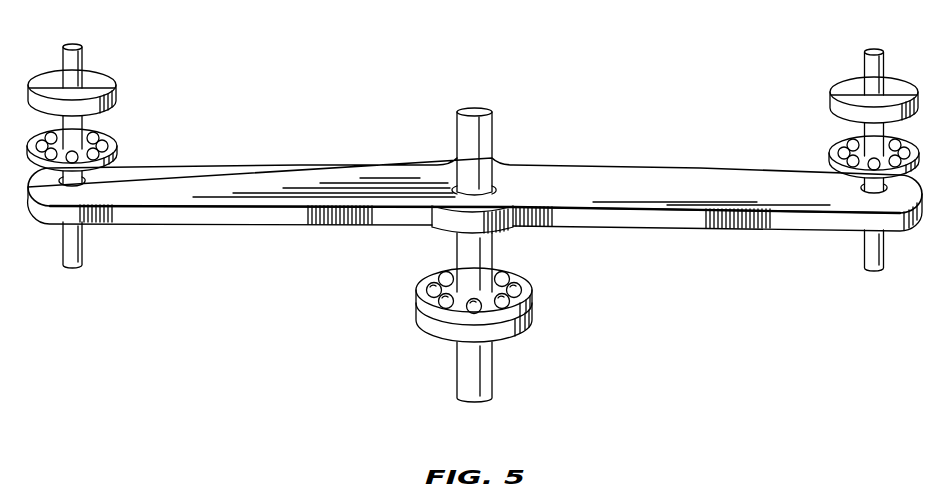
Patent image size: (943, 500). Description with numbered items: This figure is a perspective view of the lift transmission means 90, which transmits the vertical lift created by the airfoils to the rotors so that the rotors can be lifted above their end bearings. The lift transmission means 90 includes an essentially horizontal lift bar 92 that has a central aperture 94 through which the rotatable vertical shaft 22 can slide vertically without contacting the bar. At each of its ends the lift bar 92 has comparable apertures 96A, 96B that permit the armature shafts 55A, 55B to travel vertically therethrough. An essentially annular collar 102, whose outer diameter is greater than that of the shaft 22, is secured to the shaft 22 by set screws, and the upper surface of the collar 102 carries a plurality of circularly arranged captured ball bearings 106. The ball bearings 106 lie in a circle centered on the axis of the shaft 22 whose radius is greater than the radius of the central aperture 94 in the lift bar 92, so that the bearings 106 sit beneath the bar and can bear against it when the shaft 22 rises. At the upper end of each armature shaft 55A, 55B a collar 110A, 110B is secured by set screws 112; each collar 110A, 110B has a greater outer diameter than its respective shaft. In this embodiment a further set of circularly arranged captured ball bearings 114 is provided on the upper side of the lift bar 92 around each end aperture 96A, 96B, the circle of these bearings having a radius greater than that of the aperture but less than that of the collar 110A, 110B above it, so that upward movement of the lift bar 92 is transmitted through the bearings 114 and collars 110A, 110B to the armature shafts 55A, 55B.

The rotatable vertical shaft 22 is at (477, 148).
The armature shaft 55A is at (74, 60).
The armature shaft 55B is at (866, 69).
The lift transmission means 90 is at (585, 293).
The lift bar 92 is at (295, 180).
The central aperture 94 is at (496, 191).
The aperture 96A is at (85, 181).
The aperture 96B is at (861, 189).
The annular collar 102 is at (417, 322).
The captured ball bearings 106 is at (432, 285).
The collar 110A is at (117, 102).
The collar 110B is at (833, 106).
The set screws 112 is at (112, 78).
The ball bearing 114 is at (117, 148).